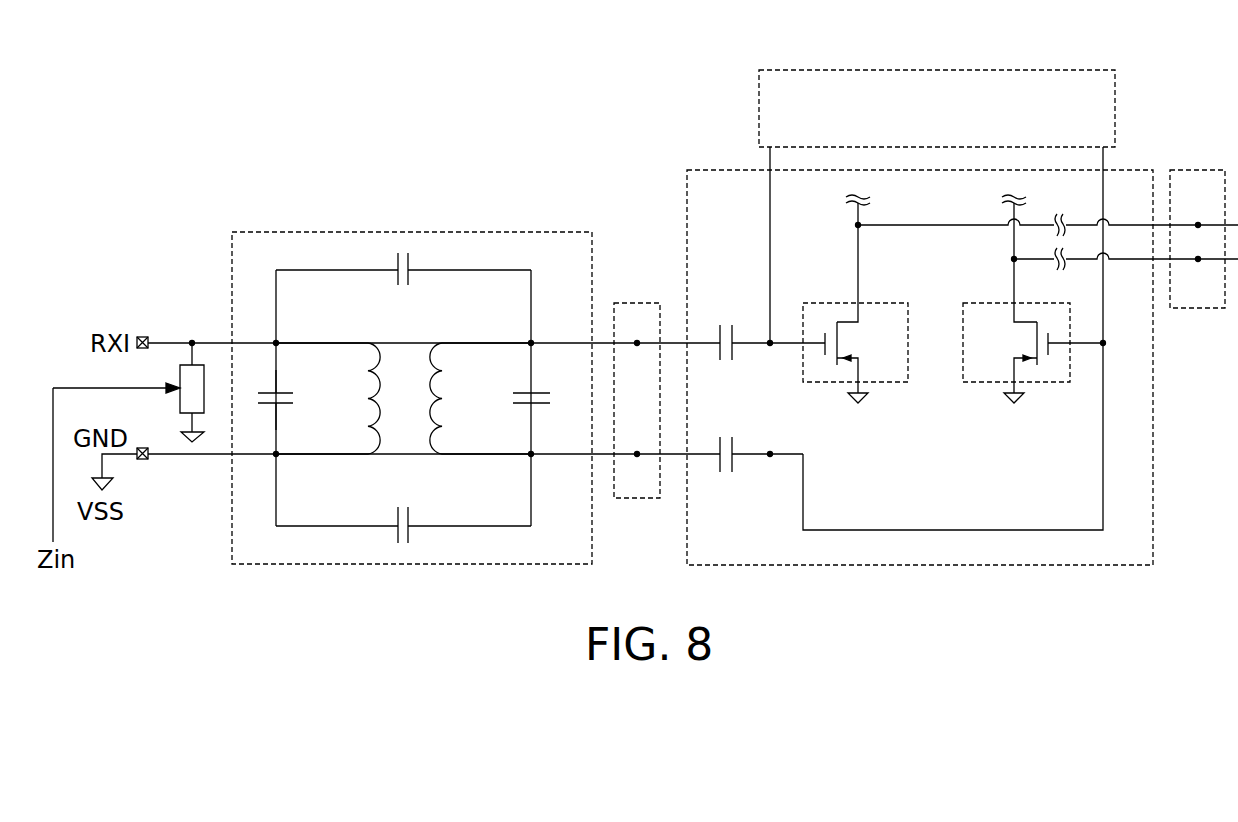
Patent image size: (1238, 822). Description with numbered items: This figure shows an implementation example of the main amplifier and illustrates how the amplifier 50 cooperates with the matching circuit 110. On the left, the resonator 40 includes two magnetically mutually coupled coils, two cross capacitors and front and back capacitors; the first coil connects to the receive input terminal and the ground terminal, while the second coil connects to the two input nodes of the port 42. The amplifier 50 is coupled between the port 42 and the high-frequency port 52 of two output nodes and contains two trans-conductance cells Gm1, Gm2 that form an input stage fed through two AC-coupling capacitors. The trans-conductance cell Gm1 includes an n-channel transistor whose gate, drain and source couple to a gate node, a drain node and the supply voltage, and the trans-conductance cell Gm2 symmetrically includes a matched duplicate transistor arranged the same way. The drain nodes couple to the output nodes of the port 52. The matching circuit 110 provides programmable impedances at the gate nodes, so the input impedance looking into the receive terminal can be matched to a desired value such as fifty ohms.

The resonator 40 is at (478, 566).
The port 42 is at (635, 500).
The amplifier 50 is at (962, 373).
The port 52 is at (1203, 168).
The matching circuit 110 is at (1116, 84).
The trans-conductance cell Gm1 is at (880, 303).
The trans-conductance cell Gm2 is at (963, 368).